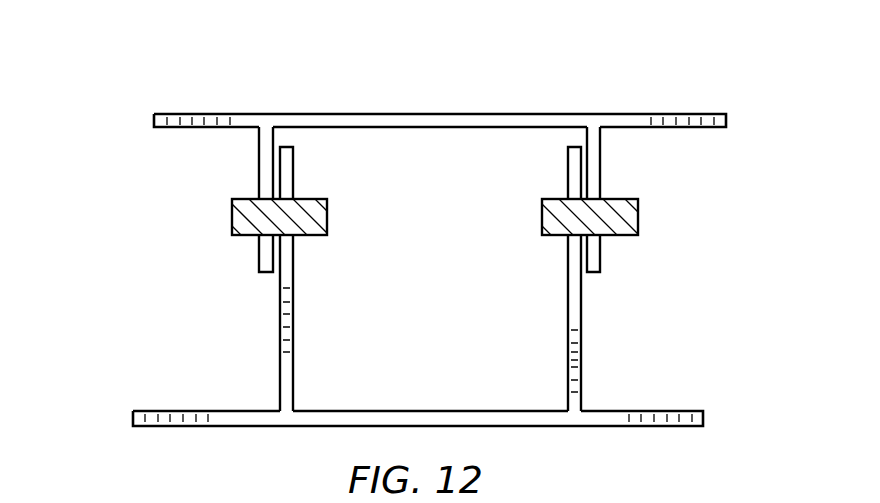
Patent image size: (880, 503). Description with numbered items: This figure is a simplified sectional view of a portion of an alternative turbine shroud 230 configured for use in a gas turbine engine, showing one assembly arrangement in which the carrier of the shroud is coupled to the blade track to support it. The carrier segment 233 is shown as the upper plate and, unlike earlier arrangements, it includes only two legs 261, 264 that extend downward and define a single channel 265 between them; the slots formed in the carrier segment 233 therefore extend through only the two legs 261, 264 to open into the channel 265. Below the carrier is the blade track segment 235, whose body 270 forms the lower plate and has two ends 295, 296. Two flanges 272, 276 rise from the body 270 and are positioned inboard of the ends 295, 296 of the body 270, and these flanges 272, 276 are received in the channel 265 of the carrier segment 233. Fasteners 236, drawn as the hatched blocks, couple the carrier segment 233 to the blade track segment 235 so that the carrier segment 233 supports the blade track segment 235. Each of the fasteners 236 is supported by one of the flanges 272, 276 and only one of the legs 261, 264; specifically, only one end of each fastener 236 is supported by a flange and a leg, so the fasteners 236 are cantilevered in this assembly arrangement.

The turbine shroud 230 is at (546, 88).
The carrier segment 233 is at (383, 117).
The blade track segment 235 is at (573, 359).
The fasteners 236 is at (250, 245).
The leg 261 is at (267, 144).
The leg 264 is at (595, 144).
The channel 265 is at (451, 155).
The body 270 is at (439, 413).
The flange 272 is at (284, 174).
The flange 276 is at (577, 167).
The end 295 is at (129, 418).
The end 296 is at (707, 419).